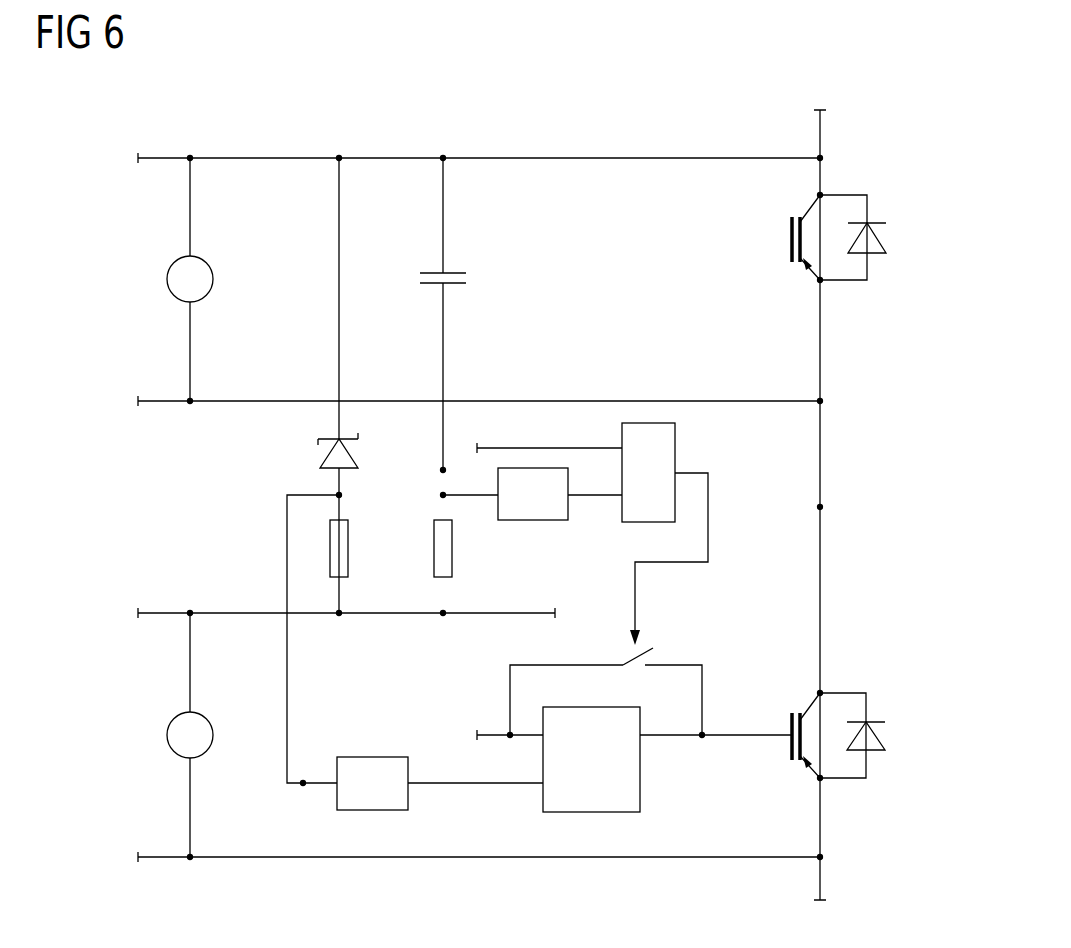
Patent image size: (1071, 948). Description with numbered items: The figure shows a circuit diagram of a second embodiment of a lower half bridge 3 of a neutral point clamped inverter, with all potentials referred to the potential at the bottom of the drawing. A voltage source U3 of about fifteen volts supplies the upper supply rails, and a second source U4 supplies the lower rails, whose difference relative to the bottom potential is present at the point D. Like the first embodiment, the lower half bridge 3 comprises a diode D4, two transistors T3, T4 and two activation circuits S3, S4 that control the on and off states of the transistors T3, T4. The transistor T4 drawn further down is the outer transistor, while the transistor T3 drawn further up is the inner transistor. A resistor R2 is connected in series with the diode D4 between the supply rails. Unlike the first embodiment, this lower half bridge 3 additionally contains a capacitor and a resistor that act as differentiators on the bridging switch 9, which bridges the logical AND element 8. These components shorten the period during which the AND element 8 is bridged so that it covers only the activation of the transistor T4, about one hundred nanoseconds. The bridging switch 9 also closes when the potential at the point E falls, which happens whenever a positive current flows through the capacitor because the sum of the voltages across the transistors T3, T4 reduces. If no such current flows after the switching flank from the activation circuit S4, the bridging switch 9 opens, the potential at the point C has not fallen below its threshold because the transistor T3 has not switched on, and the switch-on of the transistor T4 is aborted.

The lower half bridge 3 is at (104, 493).
The logical AND element 8 is at (640, 783).
The bridging switch 9 is at (628, 660).
The inner transistor T3 is at (888, 232).
The outer transistor T4 is at (888, 740).
The diode D4 is at (320, 455).
The resistor R2 is at (349, 549).
The point D is at (823, 507).
The point C is at (304, 778).
The point E is at (440, 470).
The activation circuit S3 is at (638, 237).
The activation circuit S4 is at (482, 730).
The voltage U3 is at (141, 250).
The voltage source U4 is at (141, 706).